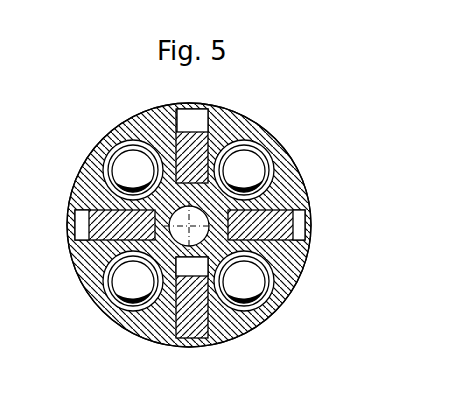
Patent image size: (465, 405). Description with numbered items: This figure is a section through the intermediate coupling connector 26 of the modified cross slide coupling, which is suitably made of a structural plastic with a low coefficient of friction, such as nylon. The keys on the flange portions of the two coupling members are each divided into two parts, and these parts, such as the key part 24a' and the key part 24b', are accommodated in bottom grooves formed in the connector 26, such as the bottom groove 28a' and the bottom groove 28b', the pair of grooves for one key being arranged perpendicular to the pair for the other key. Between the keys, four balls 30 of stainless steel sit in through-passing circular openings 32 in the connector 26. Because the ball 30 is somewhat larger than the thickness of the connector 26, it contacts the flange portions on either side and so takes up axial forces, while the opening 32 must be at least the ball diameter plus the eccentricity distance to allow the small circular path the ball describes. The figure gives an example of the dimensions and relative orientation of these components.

The intermediate coupling connector 26 is at (72, 180).
The ball 30 is at (129, 167).
The through-passing circular opening 32 is at (125, 141).
The key part 24a' is at (88, 238).
The key part 24b' is at (171, 126).
The bottom groove 28a' is at (59, 225).
The bottom groove 28b' is at (220, 101).